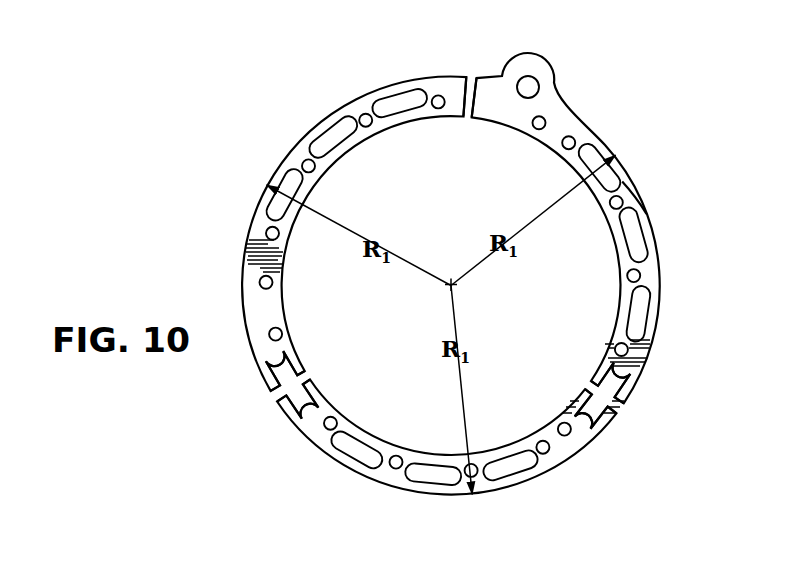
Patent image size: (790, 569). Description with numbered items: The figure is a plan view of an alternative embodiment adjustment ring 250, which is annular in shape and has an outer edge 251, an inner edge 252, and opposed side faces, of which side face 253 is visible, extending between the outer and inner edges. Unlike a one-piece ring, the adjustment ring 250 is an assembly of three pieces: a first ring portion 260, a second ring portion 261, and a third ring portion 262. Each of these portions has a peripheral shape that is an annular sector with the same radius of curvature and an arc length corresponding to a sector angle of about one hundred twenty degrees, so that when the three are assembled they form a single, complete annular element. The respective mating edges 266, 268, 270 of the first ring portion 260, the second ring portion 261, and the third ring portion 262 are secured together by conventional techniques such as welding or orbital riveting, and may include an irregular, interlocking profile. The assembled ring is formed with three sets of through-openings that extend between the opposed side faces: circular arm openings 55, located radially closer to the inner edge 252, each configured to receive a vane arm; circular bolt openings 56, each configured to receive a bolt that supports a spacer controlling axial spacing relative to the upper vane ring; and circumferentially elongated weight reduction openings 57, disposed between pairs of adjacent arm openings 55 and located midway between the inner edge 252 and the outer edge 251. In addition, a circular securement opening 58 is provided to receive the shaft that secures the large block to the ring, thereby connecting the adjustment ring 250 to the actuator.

The adjustment ring 250 is at (215, 170).
The outer edge 251 is at (353, 95).
The inner edge 252 is at (369, 127).
The side face 253 is at (297, 152).
The first ring portion 260 is at (257, 250).
The second ring portion 261 is at (636, 191).
The third ring portion 262 is at (487, 491).
The mating edge 266 is at (465, 73).
The mating edge 268 is at (473, 112).
The mating edge 270 is at (590, 386).
The arm opening 55 is at (613, 208).
The bolt opening 56 is at (270, 282).
The weight reduction opening 57 is at (594, 158).
The securement opening 58 is at (530, 85).